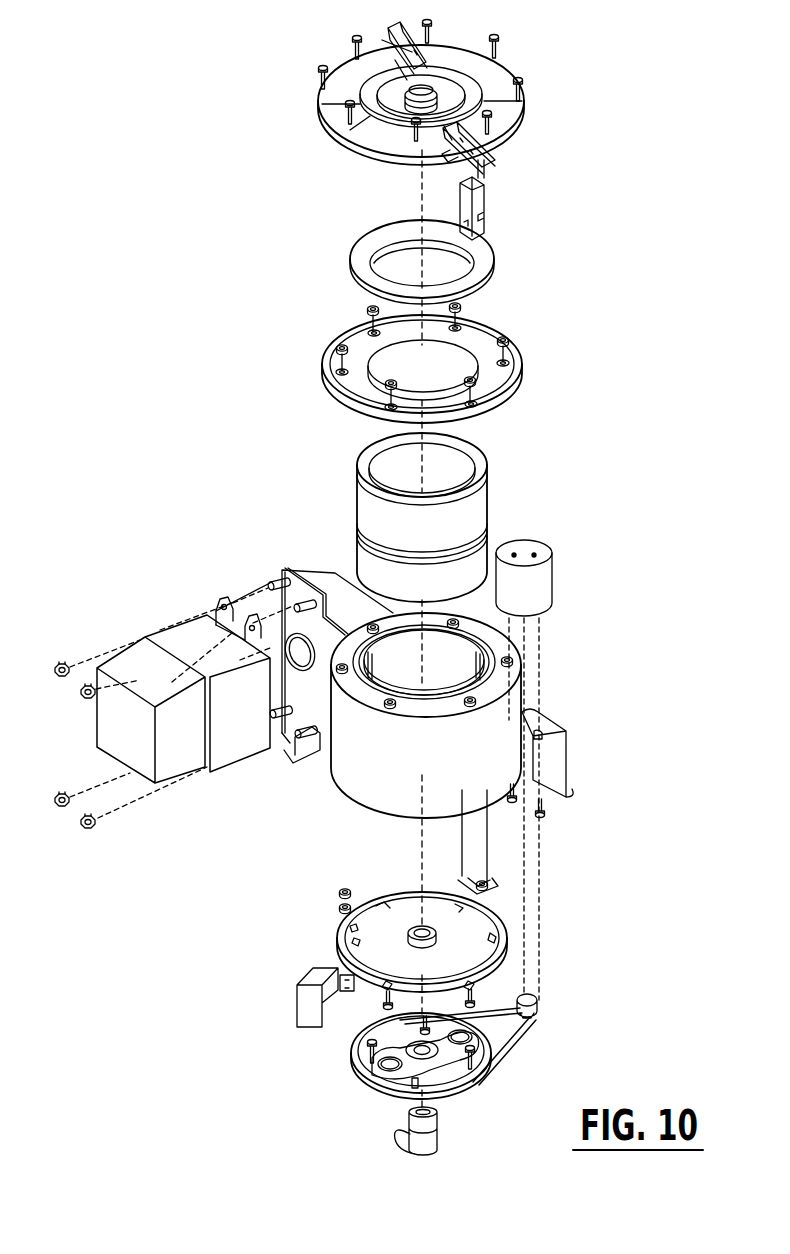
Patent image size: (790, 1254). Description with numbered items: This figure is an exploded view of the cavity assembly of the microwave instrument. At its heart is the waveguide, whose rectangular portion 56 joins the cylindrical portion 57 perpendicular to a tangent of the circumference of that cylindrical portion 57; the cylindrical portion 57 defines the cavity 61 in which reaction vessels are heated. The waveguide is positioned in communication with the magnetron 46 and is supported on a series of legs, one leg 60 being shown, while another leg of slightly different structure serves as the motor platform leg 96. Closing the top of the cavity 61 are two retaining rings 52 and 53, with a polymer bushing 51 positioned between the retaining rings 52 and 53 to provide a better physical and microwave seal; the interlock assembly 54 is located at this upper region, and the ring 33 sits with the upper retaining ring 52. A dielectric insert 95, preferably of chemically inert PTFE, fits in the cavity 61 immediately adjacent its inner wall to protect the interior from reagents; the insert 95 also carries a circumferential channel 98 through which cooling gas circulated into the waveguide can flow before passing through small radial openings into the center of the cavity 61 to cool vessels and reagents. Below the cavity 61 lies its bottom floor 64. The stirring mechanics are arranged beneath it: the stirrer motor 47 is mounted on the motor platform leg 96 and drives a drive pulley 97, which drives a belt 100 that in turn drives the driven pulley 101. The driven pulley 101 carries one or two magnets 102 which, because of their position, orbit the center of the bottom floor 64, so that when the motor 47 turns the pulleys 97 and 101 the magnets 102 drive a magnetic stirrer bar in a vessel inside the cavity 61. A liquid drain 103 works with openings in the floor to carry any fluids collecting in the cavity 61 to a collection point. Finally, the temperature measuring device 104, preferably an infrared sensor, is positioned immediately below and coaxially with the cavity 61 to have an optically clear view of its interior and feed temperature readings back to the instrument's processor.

The bearing ring 33 is at (443, 82).
The retaining ring 52 is at (503, 110).
The interlock assembly 54 is at (478, 190).
The polymer bushing 51 is at (488, 257).
The retaining ring 53 is at (502, 392).
The dielectric insert 95 is at (485, 497).
The circumferential channel 98 is at (362, 531).
The stirrer motor 47 is at (548, 586).
The rectangular portion of the waveguide 56 is at (328, 585).
The magnetron 46 is at (190, 628).
The cavity 61 is at (463, 675).
The cylindrical portion of the waveguide 57 is at (444, 768).
The motor platform leg 96 is at (558, 764).
The leg 60 is at (487, 848).
The bottom floor 64 is at (487, 940).
The drive pulley 97 is at (540, 998).
The liquid drain 103 is at (300, 1026).
The belt 100 is at (508, 1048).
The driven pulley 101 is at (453, 1070).
The magnets 102 is at (360, 1068).
The temperature measuring device 104 is at (429, 1142).